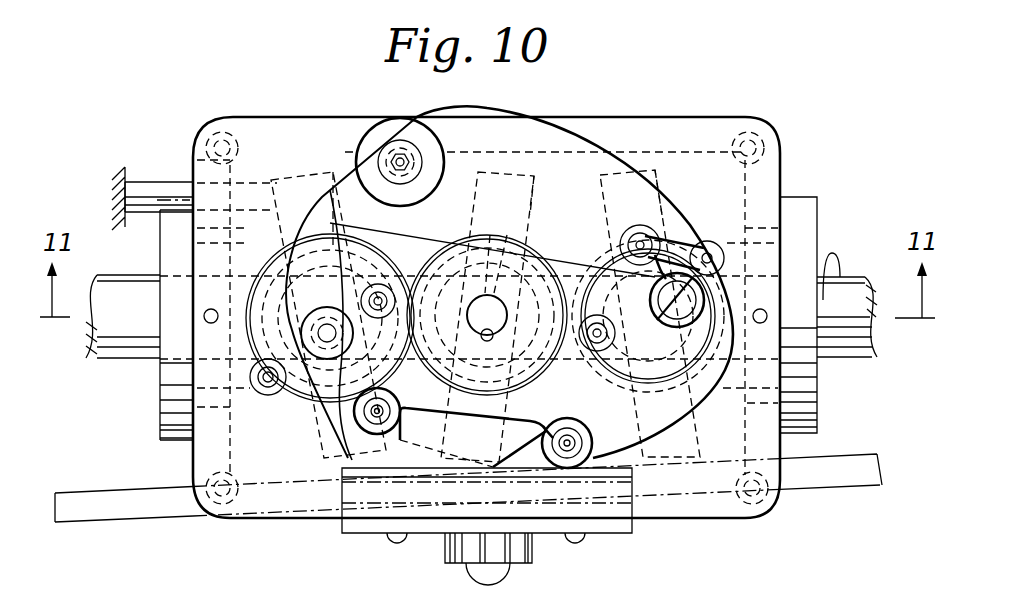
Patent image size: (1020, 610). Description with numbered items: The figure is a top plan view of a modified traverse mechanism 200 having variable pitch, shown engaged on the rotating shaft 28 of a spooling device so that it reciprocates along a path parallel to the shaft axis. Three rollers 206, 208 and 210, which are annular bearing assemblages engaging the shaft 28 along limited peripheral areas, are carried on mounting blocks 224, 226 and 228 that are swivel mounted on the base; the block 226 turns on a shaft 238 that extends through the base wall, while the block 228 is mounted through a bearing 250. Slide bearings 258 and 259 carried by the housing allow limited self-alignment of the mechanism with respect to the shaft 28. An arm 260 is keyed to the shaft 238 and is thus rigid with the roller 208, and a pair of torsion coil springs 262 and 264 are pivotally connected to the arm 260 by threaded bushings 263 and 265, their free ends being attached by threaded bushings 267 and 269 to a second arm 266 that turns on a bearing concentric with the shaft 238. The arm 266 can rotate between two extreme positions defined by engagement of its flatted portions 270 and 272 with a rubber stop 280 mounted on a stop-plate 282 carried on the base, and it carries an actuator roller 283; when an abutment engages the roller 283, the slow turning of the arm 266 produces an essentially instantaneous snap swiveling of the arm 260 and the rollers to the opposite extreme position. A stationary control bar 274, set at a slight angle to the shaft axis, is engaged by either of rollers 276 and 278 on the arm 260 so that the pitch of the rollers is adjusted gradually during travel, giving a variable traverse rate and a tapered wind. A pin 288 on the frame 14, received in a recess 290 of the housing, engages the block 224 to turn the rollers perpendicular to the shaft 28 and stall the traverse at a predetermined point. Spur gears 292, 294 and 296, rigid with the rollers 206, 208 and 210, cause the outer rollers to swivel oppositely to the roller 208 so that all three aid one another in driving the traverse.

The frame 14 is at (118, 193).
The rotating shaft 28 is at (124, 352).
The traverse mechanism 200 is at (776, 124).
The roller 206 is at (330, 163).
The roller 208 is at (543, 187).
The roller 210 is at (667, 183).
The mounting block 224 is at (303, 168).
The mounting block 226 is at (523, 168).
The mounting block 228 is at (646, 165).
The shaft 238 is at (496, 305).
The bearing 250 is at (703, 337).
The slide bearing 258 is at (172, 425).
The slide bearing 259 is at (803, 417).
The arm 260 is at (407, 253).
The torsion coil spring 262 is at (277, 393).
The threaded bushing 263 is at (378, 290).
The torsion coil spring 264 is at (690, 370).
The threaded bushing 265 is at (590, 370).
The second arm 266 is at (563, 138).
The threaded bushing 267 is at (320, 440).
The threaded bushing 269 is at (667, 208).
The flatted portion 270 is at (643, 395).
The flatted portion 272 is at (402, 465).
The control bar 274 is at (152, 512).
The roller 276 is at (572, 460).
The roller 278 is at (398, 416).
The rubber stop 280 is at (340, 507).
The stop-plate 282 is at (548, 523).
The actuator roller 283 is at (378, 132).
The pin 288 is at (137, 187).
The recess 290 is at (207, 178).
The spur gear 292 is at (273, 253).
The spur gear 294 is at (503, 245).
The spur gear 296 is at (601, 240).